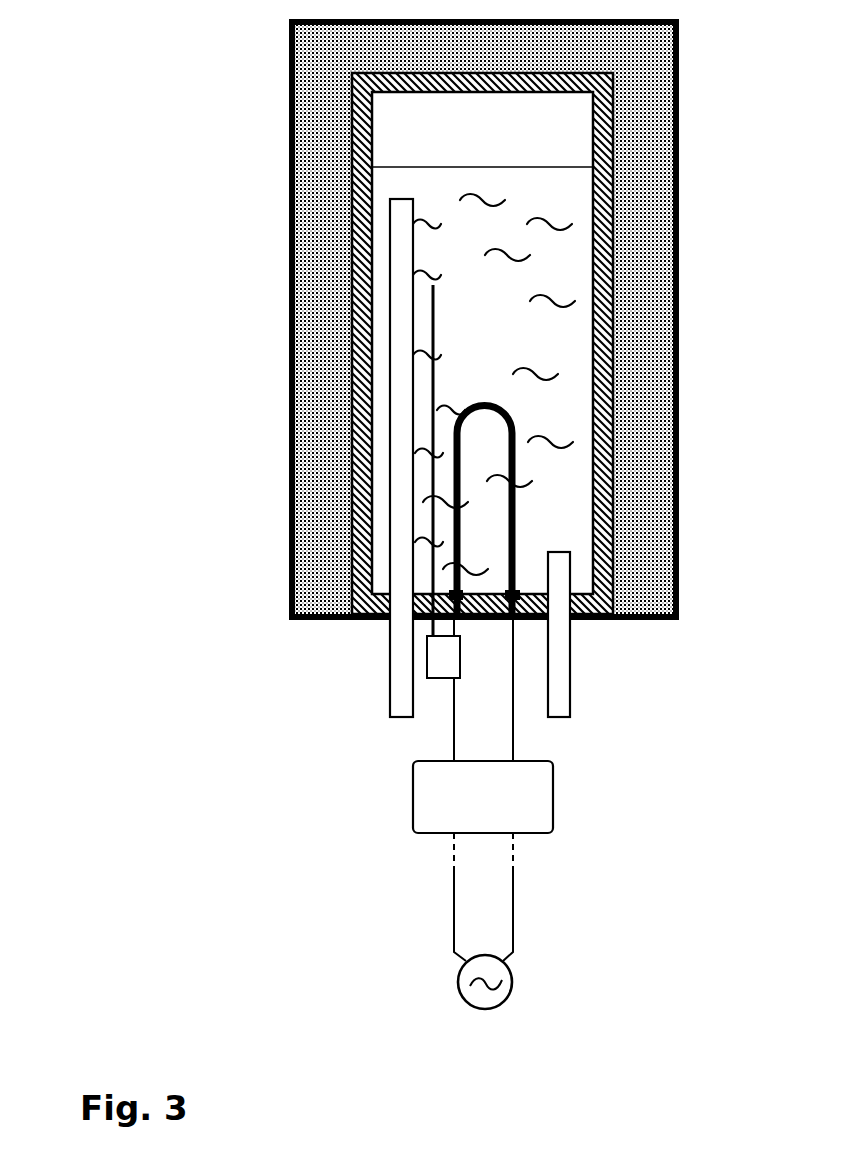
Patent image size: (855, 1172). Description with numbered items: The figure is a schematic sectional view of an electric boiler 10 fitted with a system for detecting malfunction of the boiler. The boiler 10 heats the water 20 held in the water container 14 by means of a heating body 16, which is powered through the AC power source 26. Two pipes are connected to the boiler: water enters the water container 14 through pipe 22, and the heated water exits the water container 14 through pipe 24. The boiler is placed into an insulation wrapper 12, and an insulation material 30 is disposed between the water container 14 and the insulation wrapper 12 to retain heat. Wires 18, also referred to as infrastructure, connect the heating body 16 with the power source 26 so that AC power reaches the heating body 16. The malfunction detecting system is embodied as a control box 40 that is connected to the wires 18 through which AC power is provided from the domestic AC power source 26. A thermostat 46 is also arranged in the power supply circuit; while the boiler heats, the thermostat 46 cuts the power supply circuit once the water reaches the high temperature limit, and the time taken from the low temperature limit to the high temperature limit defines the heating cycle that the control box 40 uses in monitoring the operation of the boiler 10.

The boiler 10 is at (192, 281).
The insulation wrapper 12 is at (678, 187).
The water container 14 is at (372, 127).
The heating body 16 is at (495, 408).
The wires 18 is at (454, 727).
The water 20 is at (486, 318).
The pipe 22 is at (565, 677).
The pipe 24 is at (395, 688).
The AC power source 26 is at (514, 978).
The insulation material 30 is at (655, 247).
The control box 40 is at (537, 795).
The thermostat 46 is at (456, 672).